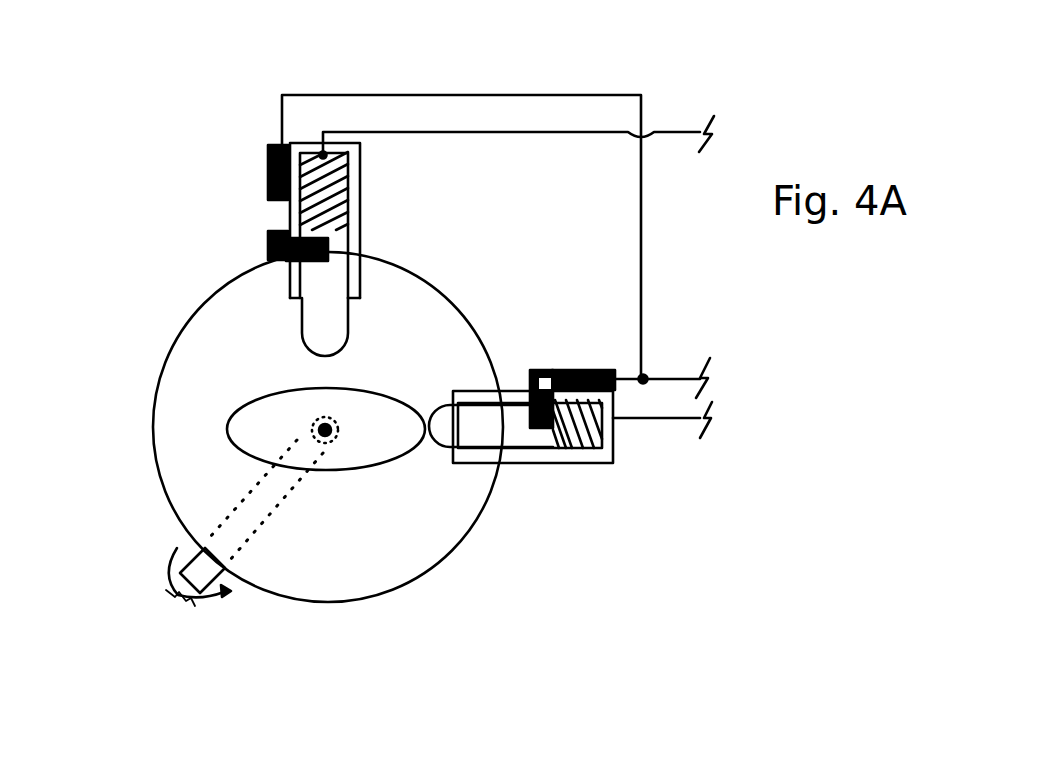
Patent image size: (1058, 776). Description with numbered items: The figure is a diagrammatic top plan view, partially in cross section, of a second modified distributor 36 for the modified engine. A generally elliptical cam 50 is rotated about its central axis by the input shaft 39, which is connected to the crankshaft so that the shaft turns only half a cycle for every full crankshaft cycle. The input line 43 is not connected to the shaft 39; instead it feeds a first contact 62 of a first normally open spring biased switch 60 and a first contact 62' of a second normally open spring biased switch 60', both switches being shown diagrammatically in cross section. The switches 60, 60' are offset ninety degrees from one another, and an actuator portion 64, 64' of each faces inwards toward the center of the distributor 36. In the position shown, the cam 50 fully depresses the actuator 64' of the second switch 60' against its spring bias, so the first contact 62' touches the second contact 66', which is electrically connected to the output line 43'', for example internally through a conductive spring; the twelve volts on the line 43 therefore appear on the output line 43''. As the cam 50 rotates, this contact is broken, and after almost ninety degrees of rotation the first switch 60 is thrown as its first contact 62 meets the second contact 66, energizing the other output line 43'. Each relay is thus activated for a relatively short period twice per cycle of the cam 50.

The distributor 36 is at (86, 580).
The input shaft 39 is at (192, 602).
The input line 43 is at (684, 357).
The output line 43' is at (523, 228).
The output line 43'' is at (686, 443).
The cam 50 is at (367, 470).
The first normally open spring biased switch 60 is at (357, 220).
The second normally open spring biased switch 60' is at (533, 462).
The first contact 62 is at (239, 172).
The first contact 62' is at (589, 357).
The actuator portion 64 is at (358, 327).
The actuator portion 64' is at (485, 463).
The second contact 66 is at (259, 252).
The second contact 66' is at (531, 363).